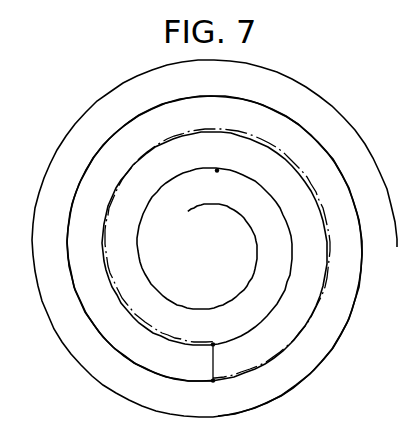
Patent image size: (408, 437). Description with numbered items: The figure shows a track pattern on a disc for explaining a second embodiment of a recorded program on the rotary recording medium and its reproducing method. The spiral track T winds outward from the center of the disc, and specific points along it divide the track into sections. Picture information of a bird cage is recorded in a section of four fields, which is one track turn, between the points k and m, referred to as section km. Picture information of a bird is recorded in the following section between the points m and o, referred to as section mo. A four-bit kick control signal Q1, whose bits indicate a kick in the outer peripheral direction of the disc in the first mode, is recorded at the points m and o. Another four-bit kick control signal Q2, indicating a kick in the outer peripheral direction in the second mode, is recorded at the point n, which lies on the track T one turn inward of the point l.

The spiral track T is at (83, 113).
The point k is at (214, 96).
The point m is at (216, 130).
The point o is at (217, 171).
The point n is at (214, 344).
The end point of track revolution l is at (213, 382).